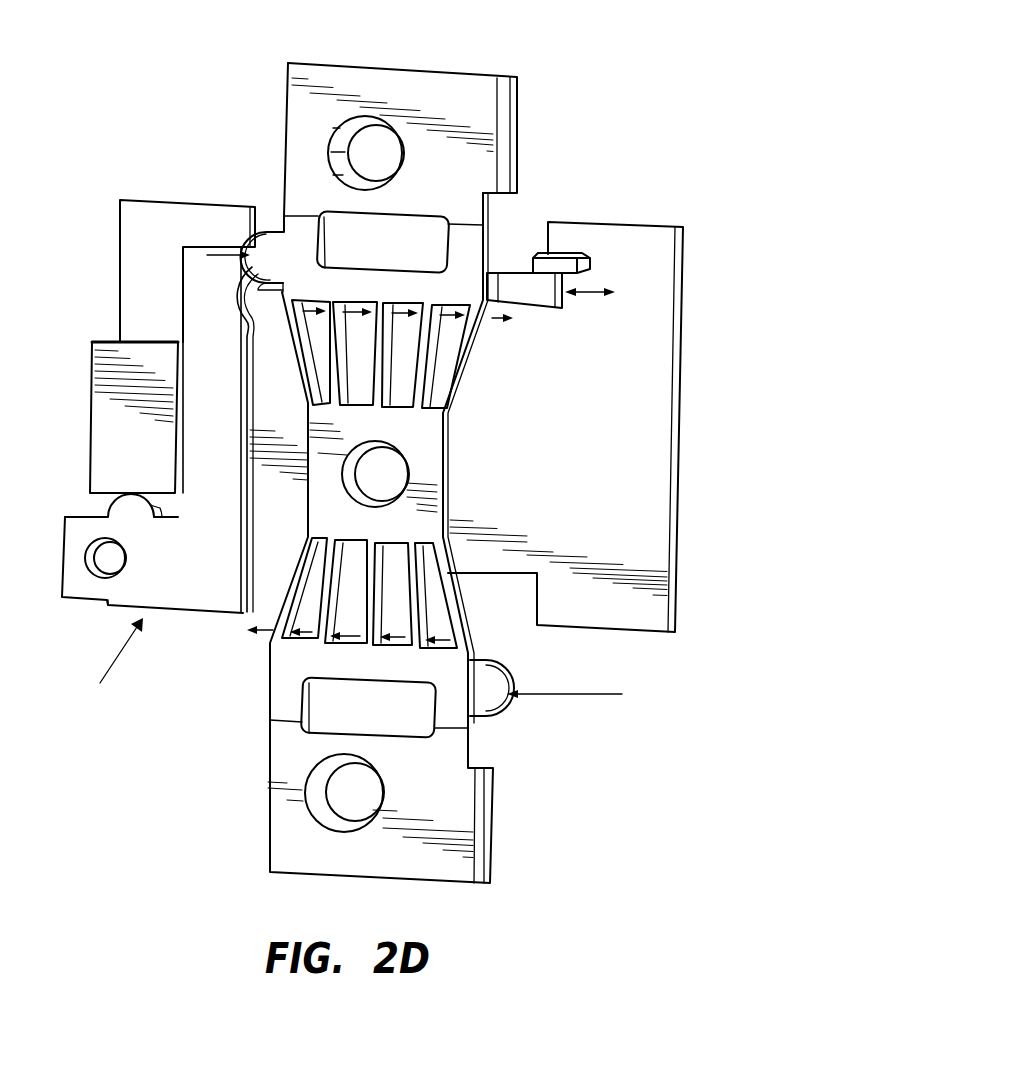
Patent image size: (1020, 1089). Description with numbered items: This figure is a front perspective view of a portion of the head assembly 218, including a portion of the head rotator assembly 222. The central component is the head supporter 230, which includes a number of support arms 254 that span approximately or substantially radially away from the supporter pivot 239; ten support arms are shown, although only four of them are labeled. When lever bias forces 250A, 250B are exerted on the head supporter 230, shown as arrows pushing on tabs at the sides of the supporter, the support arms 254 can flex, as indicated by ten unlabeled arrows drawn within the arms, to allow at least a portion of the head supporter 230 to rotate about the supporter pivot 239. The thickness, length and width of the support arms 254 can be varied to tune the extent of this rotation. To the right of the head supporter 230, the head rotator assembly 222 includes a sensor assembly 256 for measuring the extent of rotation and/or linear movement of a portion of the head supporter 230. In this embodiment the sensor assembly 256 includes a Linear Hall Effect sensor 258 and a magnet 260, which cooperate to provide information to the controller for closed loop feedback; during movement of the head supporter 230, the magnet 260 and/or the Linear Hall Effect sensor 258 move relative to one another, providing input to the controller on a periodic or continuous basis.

The head assembly 218 is at (584, 90).
The head rotator assembly 222 is at (158, 466).
The head supporter 230 is at (287, 665).
The supporter pivot 239 is at (350, 472).
The lever bias force 250A is at (577, 695).
The lever bias force 250B is at (228, 252).
The support arms 254 is at (430, 340).
The sensor assembly 256 is at (750, 76).
The Linear Hall Effect sensor 258 is at (523, 268).
The magnet 260 is at (565, 256).